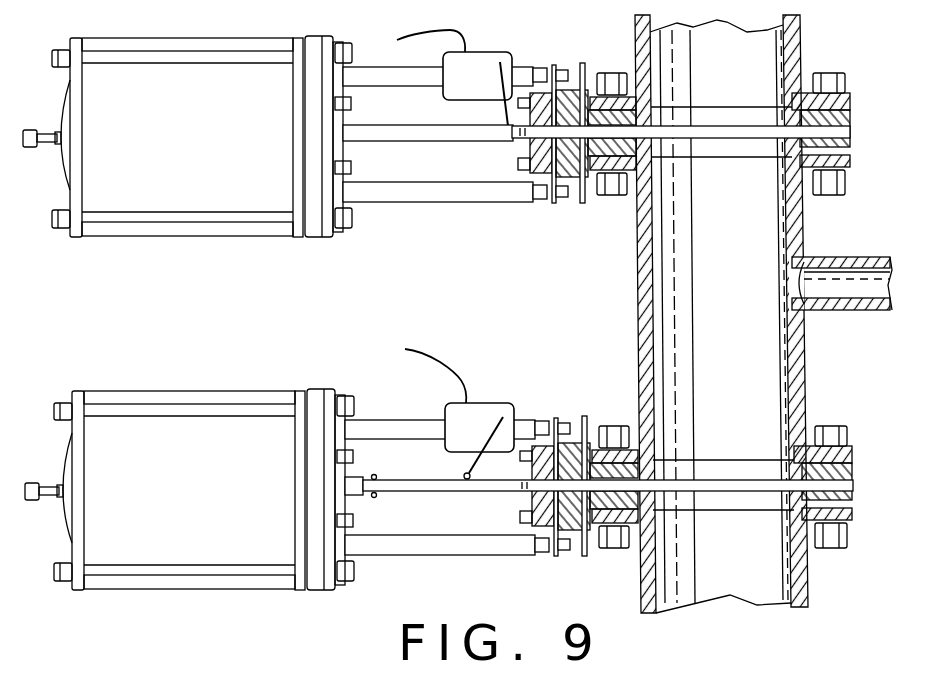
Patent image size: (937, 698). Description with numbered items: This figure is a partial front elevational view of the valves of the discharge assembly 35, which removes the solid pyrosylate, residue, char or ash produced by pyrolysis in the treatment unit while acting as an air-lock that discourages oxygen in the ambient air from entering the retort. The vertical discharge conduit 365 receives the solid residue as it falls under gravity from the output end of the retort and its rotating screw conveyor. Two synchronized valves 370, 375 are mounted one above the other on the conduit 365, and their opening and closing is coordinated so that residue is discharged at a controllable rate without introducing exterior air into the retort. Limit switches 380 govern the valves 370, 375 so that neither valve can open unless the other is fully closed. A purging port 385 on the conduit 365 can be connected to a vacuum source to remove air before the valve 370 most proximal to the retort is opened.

The discharge assembly 35 is at (760, 630).
The discharge conduit 365 is at (755, 301).
The valve 370 is at (695, 125).
The valve 375 is at (481, 492).
The limit switches 380 is at (487, 58).
The purging port 385 is at (878, 258).